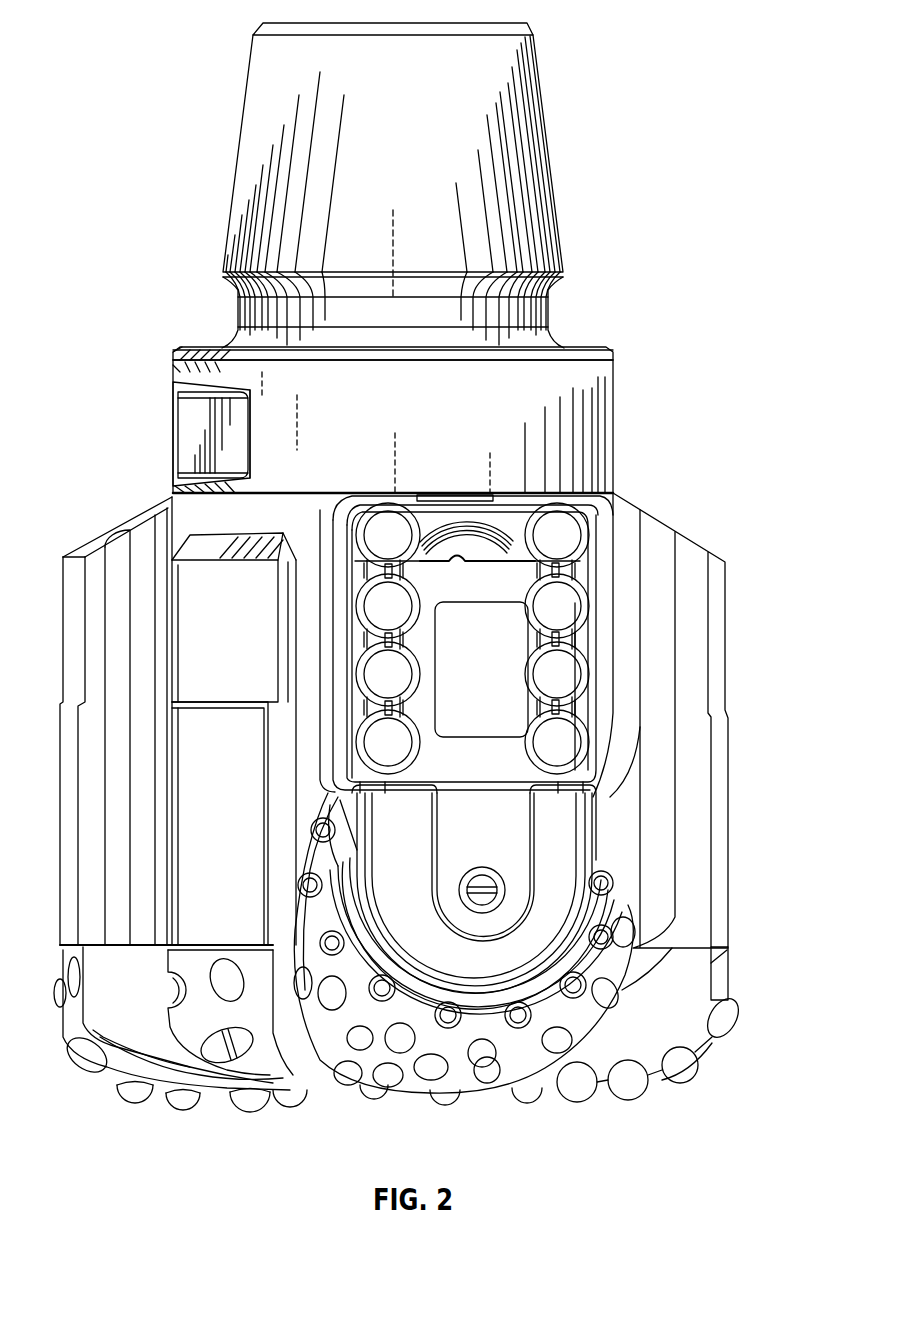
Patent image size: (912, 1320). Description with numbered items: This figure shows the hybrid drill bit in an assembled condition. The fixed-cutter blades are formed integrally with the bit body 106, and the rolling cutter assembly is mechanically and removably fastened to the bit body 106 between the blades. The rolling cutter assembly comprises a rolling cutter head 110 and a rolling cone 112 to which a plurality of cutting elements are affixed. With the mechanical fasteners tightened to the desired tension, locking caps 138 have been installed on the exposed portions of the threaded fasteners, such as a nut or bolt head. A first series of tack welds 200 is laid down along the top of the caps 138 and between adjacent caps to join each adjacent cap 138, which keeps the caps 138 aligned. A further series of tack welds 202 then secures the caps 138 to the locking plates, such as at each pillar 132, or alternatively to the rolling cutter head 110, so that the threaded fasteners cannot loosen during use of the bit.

The bit body 106 is at (593, 431).
The rolling cutter head 110 is at (567, 867).
The rolling cone 112 is at (331, 1085).
The pillars 132 is at (383, 570).
The locking caps 138 is at (382, 530).
The tack welds 200 is at (378, 570).
The tack welds 202 is at (372, 571).